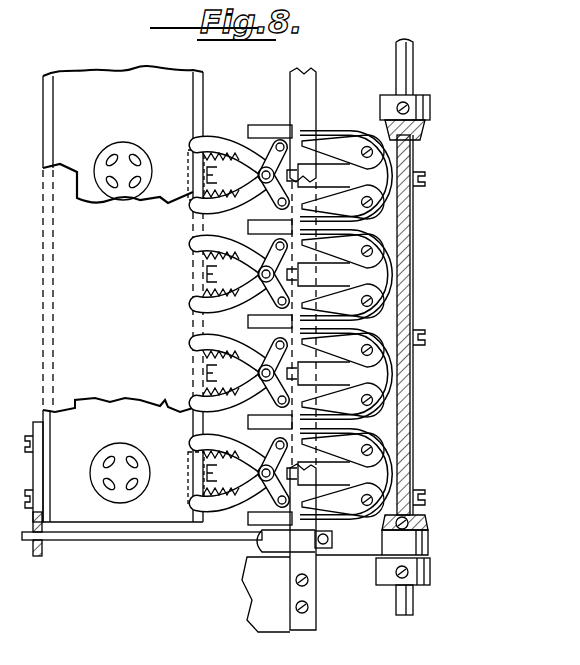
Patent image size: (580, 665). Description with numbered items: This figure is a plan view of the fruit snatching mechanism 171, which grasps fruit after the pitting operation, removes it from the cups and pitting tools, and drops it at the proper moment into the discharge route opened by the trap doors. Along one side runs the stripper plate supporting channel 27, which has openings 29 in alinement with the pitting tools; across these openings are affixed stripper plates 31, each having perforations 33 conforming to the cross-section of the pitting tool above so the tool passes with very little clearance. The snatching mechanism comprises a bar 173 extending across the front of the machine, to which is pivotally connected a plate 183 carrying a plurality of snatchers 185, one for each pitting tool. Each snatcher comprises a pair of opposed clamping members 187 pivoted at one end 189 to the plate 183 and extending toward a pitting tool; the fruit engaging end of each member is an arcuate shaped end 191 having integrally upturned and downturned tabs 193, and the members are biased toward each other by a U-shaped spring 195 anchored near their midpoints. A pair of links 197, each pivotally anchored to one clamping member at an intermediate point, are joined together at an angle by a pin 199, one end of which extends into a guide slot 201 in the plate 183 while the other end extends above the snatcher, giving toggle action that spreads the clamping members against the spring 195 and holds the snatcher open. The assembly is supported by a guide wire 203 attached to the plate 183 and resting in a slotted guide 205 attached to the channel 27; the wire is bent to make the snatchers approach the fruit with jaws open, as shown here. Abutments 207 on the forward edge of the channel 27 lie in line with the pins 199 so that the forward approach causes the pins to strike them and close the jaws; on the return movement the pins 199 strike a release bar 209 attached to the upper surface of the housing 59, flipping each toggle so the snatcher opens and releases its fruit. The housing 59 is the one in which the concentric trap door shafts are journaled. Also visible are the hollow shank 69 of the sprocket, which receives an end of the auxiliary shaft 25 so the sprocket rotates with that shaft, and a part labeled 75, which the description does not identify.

The stripper plate supporting channel 27 is at (180, 100).
The opening 29 is at (116, 145).
The stripper plate 31 is at (88, 200).
The perforation 33 is at (132, 188).
The housing 59 is at (262, 595).
The fruit snatching mechanism 171 is at (360, 97).
The bar 173 is at (418, 602).
The plate 183 is at (360, 557).
The snatcher 185 is at (348, 279).
The clamping member 187 is at (250, 130).
The pivot end 189 is at (373, 152).
The arcuate shaped end 191 is at (238, 118).
The tabs 193 is at (230, 300).
The U-shaped spring 195 is at (338, 140).
The link 197 is at (286, 145).
The pin 199 is at (264, 176).
The guide slot 201 is at (300, 176).
The guide wire 203 is at (88, 542).
The slotted guide 205 is at (33, 546).
The abutment 207 is at (193, 200).
The release bar 209 is at (300, 80).
The adjacent part 75 is at (8, 261).
The hollow shank 69 is at (8, 285).
The auxiliary shaft 25 is at (8, 310).